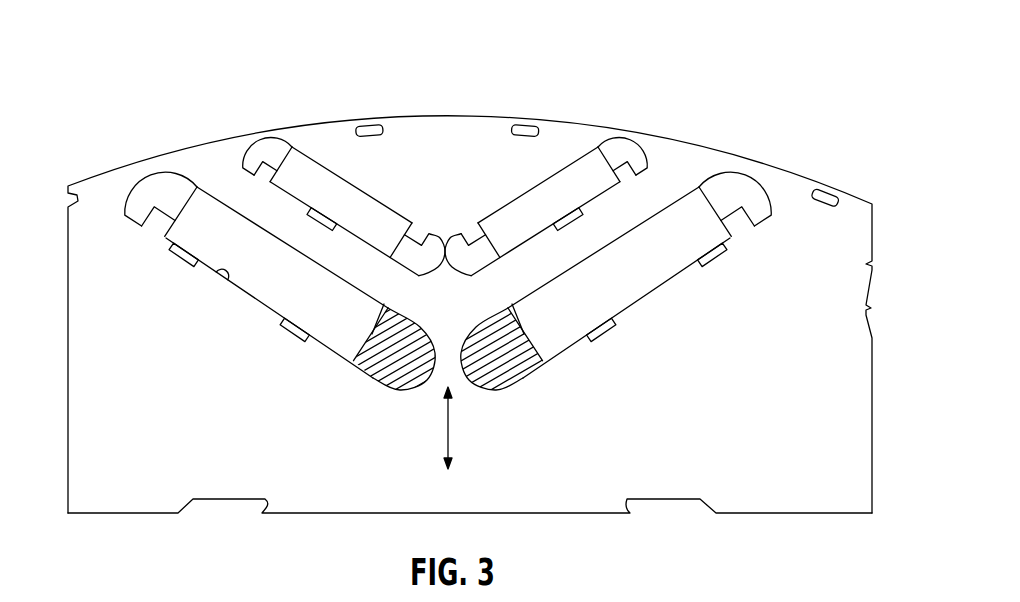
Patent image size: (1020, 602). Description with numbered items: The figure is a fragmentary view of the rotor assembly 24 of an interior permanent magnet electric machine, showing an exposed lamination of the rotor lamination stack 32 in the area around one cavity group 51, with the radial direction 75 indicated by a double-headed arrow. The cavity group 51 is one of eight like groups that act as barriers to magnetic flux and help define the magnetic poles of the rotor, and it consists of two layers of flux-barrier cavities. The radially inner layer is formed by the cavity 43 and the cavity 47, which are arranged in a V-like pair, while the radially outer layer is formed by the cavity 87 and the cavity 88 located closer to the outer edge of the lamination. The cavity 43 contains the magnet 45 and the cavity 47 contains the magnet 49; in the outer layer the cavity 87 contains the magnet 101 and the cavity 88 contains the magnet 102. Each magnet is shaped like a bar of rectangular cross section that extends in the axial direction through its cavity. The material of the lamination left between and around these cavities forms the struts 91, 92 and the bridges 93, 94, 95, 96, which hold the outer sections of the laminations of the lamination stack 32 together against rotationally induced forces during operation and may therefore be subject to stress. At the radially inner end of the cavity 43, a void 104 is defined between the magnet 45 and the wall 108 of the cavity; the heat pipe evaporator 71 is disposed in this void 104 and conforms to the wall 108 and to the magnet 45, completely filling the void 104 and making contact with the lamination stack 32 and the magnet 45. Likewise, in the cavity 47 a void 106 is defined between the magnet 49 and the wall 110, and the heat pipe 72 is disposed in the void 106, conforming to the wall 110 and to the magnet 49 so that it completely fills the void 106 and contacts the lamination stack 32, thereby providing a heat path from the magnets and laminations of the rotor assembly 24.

The rotor assembly 24 is at (863, 190).
The rotor lamination stack 32 is at (240, 411).
The cavity 43 is at (140, 200).
The magnet 45 is at (270, 271).
The cavity 47 is at (726, 178).
The magnet 49 is at (642, 273).
The cavity group 51 is at (484, 149).
The heat pipe evaporator 71 is at (385, 331).
The heat pipe 72 is at (514, 325).
The radial direction 75 is at (448, 425).
The cavity 87 is at (262, 137).
The cavity 88 is at (461, 263).
The strut 91 is at (468, 257).
The strut 92 is at (449, 368).
The bridge 93 is at (136, 175).
The bridge 94 is at (277, 149).
The bridge 95 is at (637, 132).
The bridge 96 is at (758, 165).
The magnet 101 is at (318, 172).
The magnet 102 is at (597, 157).
The void 104 is at (378, 357).
The void 106 is at (512, 355).
The wall 108 is at (217, 274).
The wall 110 is at (490, 370).